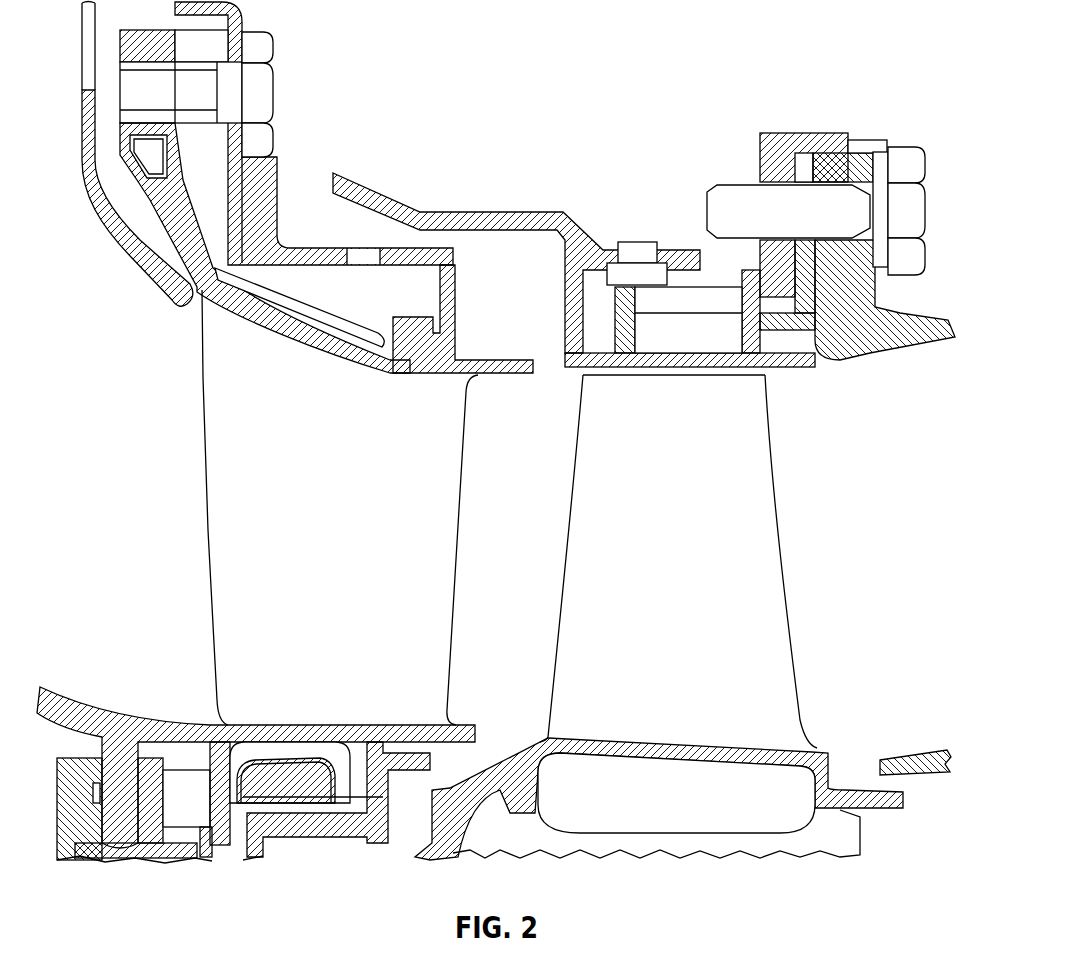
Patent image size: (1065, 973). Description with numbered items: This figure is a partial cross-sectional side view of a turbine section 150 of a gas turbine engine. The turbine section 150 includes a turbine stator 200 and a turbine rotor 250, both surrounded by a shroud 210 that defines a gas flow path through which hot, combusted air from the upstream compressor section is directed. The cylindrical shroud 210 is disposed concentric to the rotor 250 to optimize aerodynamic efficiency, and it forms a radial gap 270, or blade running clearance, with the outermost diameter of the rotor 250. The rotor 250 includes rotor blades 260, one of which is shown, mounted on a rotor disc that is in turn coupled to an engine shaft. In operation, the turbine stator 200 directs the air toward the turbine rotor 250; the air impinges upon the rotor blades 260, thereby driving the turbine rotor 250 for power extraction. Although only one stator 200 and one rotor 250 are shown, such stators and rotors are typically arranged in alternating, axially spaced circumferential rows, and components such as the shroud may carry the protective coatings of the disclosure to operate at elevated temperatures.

The turbine section 150 is at (381, 128).
The turbine stator 200 is at (227, 567).
The shroud 210 is at (697, 345).
The turbine rotor 250 is at (683, 616).
The rotor blades 260 is at (755, 512).
The radial gap 270 is at (583, 372).